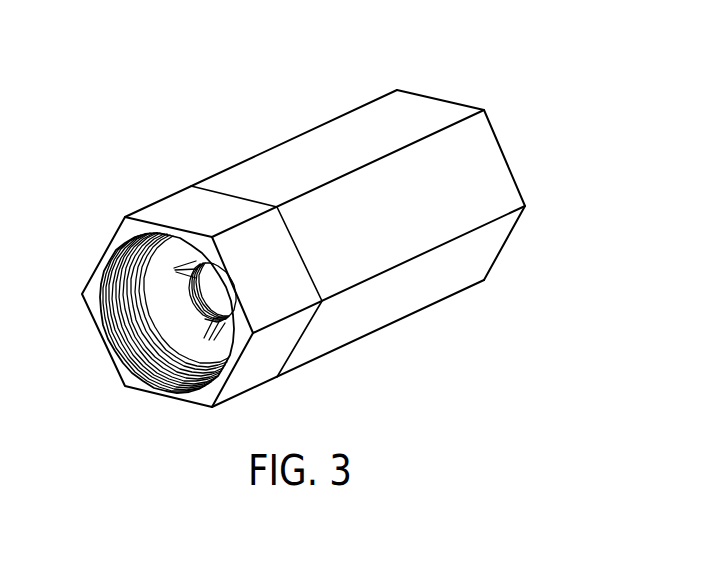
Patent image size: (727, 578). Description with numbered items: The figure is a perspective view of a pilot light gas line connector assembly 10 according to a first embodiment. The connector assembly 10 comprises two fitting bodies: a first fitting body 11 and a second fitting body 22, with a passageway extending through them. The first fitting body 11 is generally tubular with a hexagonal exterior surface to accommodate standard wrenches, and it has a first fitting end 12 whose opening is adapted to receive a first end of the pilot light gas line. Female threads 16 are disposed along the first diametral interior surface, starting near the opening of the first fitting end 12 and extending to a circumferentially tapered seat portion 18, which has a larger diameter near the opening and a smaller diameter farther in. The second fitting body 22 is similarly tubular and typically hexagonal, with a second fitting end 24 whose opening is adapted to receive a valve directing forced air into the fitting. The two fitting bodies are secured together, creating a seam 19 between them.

The pilot light gas line connector assembly 10 is at (160, 118).
The first fitting body 11 is at (150, 218).
The first fitting end 12 is at (97, 342).
The female threads 16 is at (133, 285).
The circumferentially tapered seat portion 18 is at (200, 317).
The seam 19 is at (232, 195).
The second fitting body 22 is at (328, 142).
The second fitting end 24 is at (517, 148).